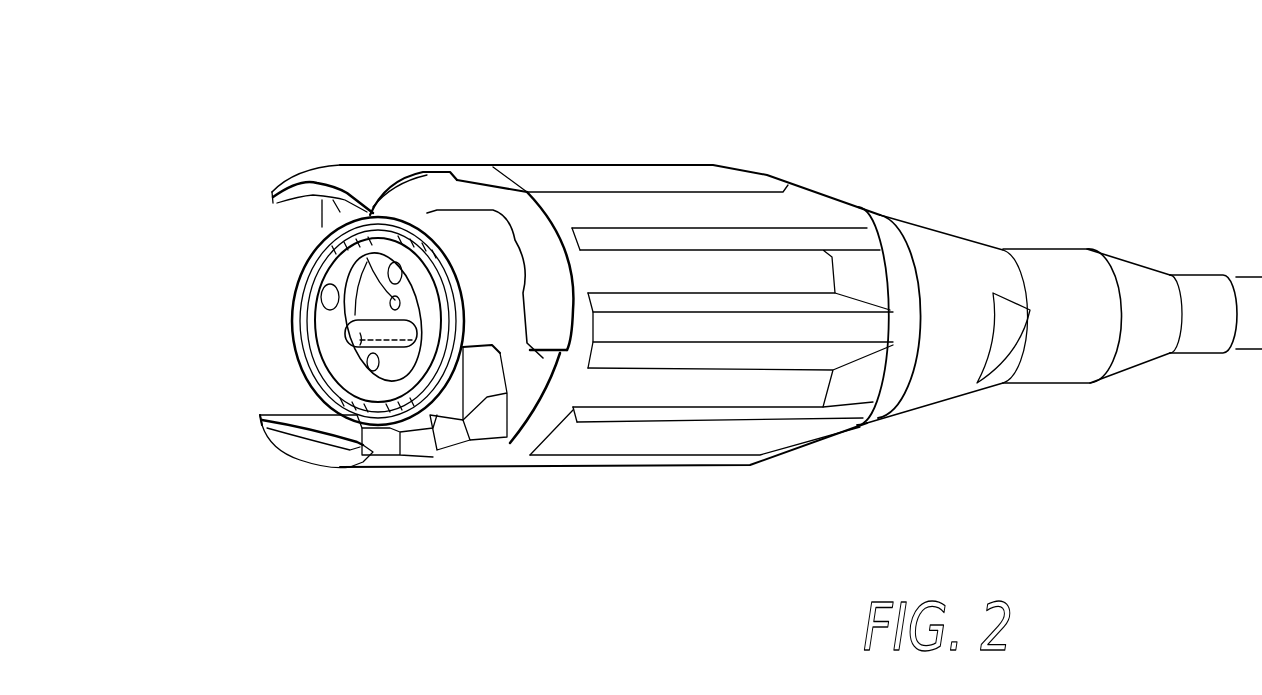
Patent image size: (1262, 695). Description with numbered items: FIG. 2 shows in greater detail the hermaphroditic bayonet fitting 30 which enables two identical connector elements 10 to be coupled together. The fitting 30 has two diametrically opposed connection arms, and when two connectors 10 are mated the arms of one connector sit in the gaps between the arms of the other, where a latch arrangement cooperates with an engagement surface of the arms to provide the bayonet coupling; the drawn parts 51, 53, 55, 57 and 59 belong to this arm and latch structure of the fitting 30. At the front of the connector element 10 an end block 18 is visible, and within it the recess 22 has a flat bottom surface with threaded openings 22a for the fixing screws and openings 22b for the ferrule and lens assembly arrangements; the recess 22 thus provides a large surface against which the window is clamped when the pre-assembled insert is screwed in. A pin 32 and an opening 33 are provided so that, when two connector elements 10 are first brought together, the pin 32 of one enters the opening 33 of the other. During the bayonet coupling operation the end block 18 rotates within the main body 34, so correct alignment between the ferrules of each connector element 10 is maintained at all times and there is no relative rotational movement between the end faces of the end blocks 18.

The connector element 10 is at (801, 269).
The end block 18 is at (382, 387).
The recess 22 is at (357, 277).
The threaded openings 22a is at (368, 358).
The openings 22b is at (360, 262).
The hermaphroditic bayonet fitting 30 is at (345, 140).
The pin 32 is at (400, 338).
The opening 33 is at (330, 302).
The main body 34 is at (746, 183).
The flange 51 is at (385, 190).
The lower latch hook 53 is at (333, 462).
The latch arm 55 is at (273, 238).
The latch ramp 57 is at (480, 363).
The hook tip 59 is at (293, 417).